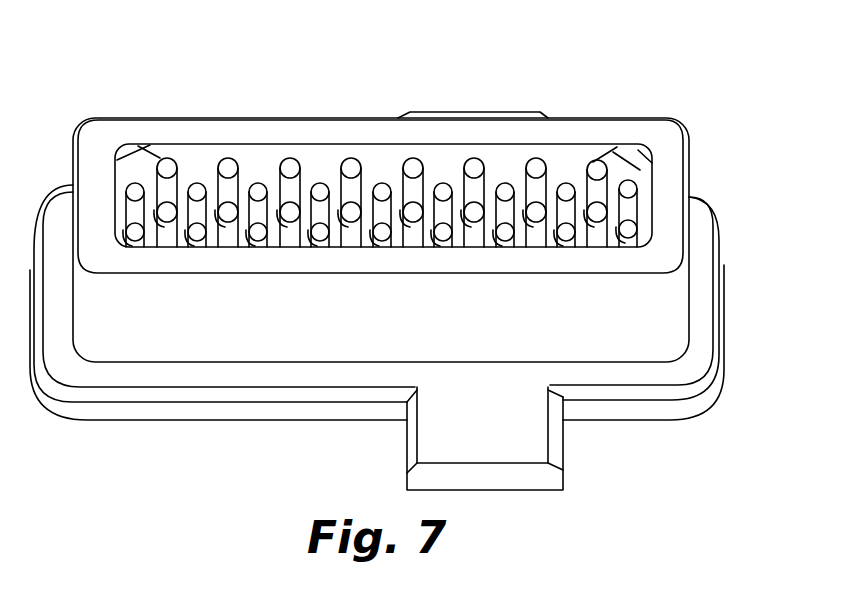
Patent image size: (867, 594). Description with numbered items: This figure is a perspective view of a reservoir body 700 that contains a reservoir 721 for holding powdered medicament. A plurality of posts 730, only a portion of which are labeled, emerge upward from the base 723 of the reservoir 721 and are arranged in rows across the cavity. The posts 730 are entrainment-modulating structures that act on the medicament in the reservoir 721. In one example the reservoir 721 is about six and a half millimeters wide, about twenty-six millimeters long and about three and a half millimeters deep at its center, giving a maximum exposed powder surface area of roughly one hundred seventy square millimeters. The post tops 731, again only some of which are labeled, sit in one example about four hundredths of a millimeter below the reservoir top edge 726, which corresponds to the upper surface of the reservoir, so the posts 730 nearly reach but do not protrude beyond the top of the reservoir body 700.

The reservoir body 700 is at (396, 250).
The reservoir 721 is at (502, 166).
The base 723 is at (640, 172).
The reservoir top edge 726 is at (119, 133).
The posts 730 is at (286, 188).
The post tops 731 is at (444, 190).